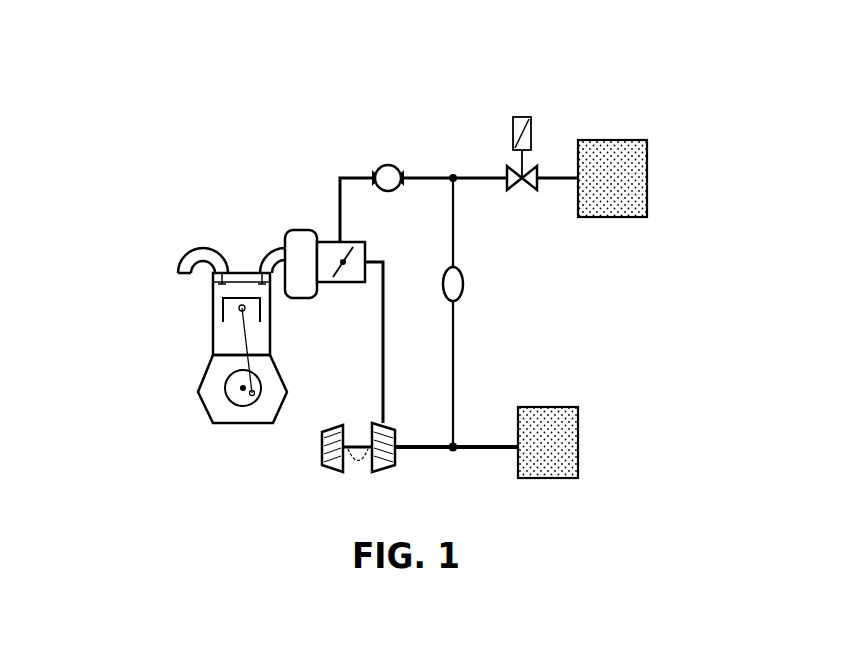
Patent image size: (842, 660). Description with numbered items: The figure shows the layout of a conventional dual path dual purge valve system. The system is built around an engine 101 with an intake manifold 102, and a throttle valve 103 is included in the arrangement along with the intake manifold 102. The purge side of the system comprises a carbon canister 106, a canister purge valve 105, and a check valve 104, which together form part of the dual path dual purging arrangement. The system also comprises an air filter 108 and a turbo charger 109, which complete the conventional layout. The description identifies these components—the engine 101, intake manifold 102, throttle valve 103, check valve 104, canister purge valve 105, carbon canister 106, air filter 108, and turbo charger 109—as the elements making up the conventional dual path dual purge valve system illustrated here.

The engine 101 is at (213, 324).
The intake manifold 102 is at (296, 230).
The throttle valve 103 is at (333, 242).
The check valve 104 is at (387, 165).
The canister purge valve 105 is at (521, 117).
The carbon canister 106 is at (647, 178).
The air filter 108 is at (578, 439).
The turbo charger 109 is at (322, 463).